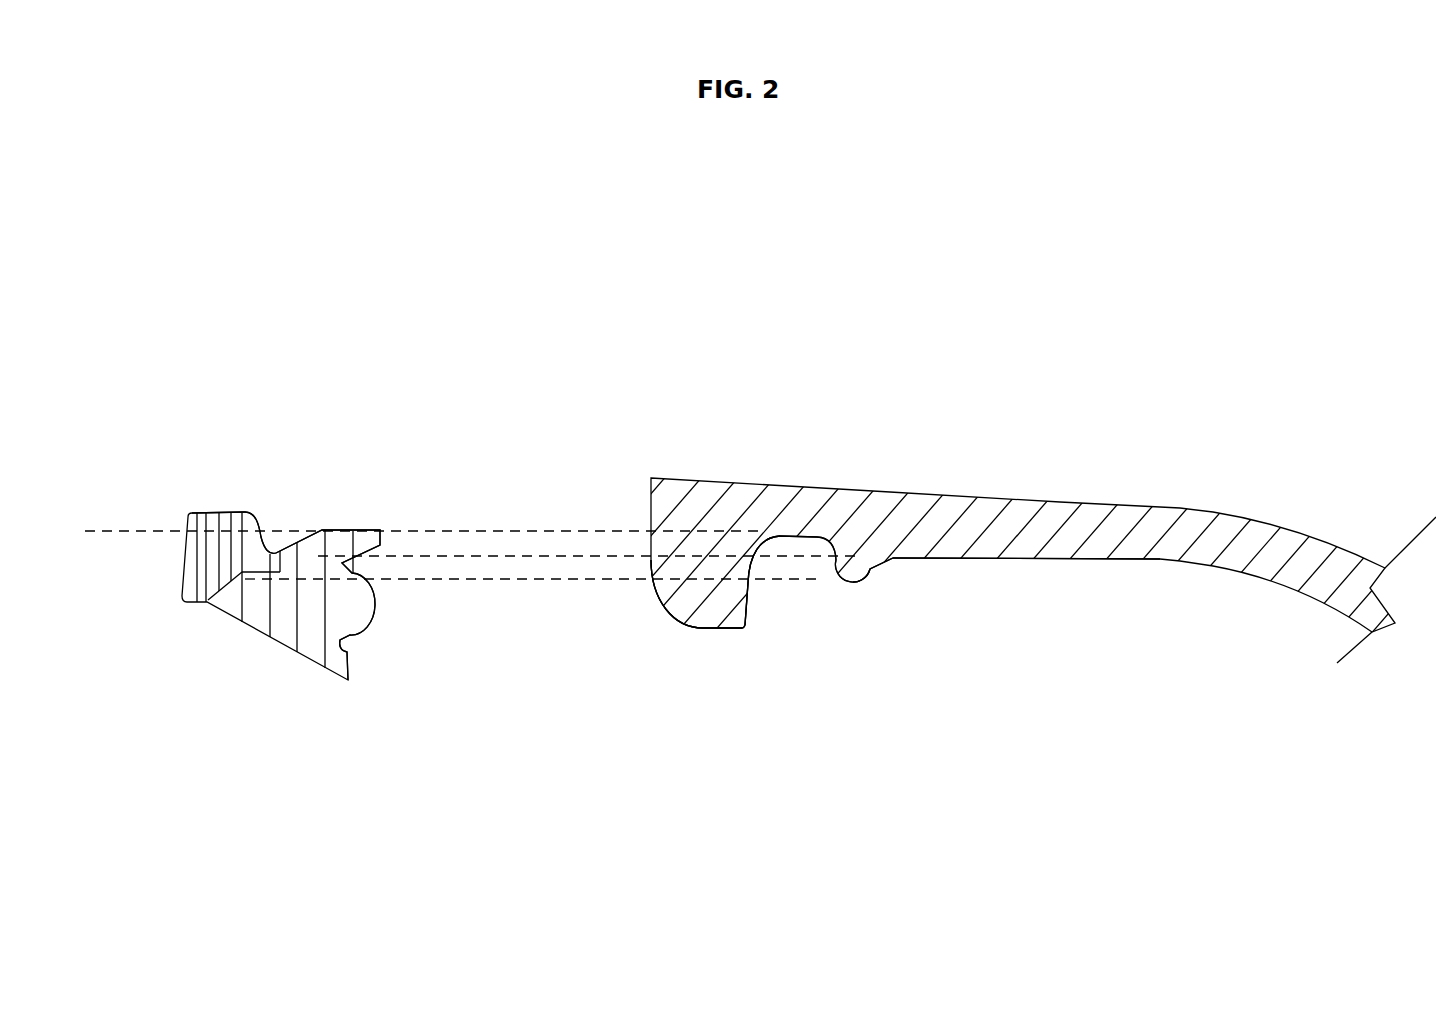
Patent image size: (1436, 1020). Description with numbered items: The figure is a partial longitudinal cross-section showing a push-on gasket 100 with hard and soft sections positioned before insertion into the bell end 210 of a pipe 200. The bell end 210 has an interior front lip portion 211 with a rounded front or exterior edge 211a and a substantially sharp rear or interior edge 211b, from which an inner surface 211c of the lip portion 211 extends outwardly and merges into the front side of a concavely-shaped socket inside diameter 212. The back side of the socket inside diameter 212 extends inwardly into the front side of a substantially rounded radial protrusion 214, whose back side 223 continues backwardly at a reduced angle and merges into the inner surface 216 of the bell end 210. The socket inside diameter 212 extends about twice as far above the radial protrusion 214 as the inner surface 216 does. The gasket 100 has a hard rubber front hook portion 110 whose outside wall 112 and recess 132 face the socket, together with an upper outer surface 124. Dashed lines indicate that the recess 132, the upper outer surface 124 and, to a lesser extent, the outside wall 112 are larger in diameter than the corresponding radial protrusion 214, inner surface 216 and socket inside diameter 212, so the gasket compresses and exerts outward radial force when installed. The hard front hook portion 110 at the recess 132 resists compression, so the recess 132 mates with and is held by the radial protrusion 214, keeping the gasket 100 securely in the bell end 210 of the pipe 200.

The gasket 100 is at (178, 493).
The front hook portion 110 is at (187, 575).
The outside wall 112 is at (230, 515).
The recess 132 is at (272, 553).
The upper outer surface 124 is at (350, 532).
The pipe 200 is at (672, 425).
The bell end 210 is at (653, 479).
The interior front lip portion 211 is at (695, 633).
The rounded front or exterior edge 211a is at (681, 592).
The substantially sharp rear or interior edge 211b is at (743, 630).
The inner surface of the lip portion 211c is at (749, 593).
The concavely-shaped socket inside diameter 212 is at (803, 535).
The substantially rounded radial protrusion 214 is at (852, 580).
The back side of the radial protrusion 223 is at (870, 573).
The inner surface of the bell end 216 is at (927, 557).